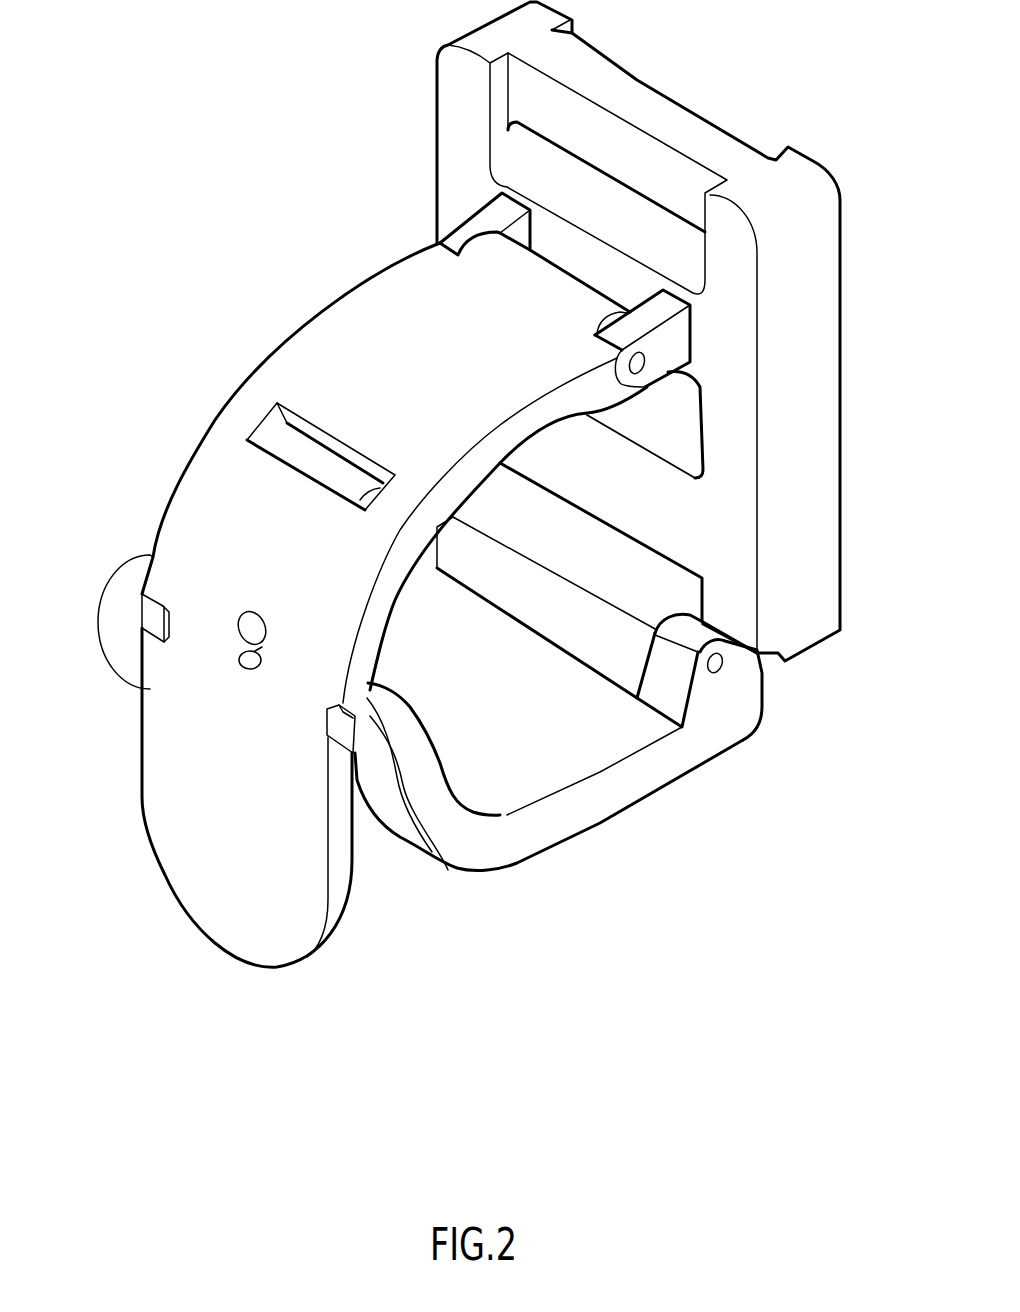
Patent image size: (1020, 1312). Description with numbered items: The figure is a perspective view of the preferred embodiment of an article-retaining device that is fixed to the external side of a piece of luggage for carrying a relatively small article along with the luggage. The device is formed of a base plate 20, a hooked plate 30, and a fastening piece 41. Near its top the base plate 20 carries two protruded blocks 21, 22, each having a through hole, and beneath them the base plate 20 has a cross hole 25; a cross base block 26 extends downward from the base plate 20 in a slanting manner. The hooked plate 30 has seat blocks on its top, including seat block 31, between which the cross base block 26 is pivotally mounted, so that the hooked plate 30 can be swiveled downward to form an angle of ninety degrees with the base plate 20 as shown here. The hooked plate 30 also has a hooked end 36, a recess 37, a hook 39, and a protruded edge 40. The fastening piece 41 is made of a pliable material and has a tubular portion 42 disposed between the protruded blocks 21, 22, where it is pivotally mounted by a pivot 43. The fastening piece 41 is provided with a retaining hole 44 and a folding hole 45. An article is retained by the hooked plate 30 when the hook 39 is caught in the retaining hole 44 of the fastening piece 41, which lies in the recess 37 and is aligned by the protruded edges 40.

The base plate 20 is at (823, 197).
The protruded block 21 is at (463, 235).
The protruded block 22 is at (677, 342).
The cross hole 25 is at (667, 405).
The cross base block 26 is at (625, 587).
The hooked plate 30 is at (602, 803).
The seat block 31 is at (703, 703).
The hooked end 36 is at (117, 595).
The recess 37 is at (444, 868).
The hook 39 is at (248, 660).
The protruded edge 40 is at (150, 622).
The fastening piece 41 is at (218, 917).
The tubular portion 42 is at (600, 320).
The pivot 43 is at (645, 366).
The retaining hole 44 is at (250, 625).
The folding hole 45 is at (290, 440).